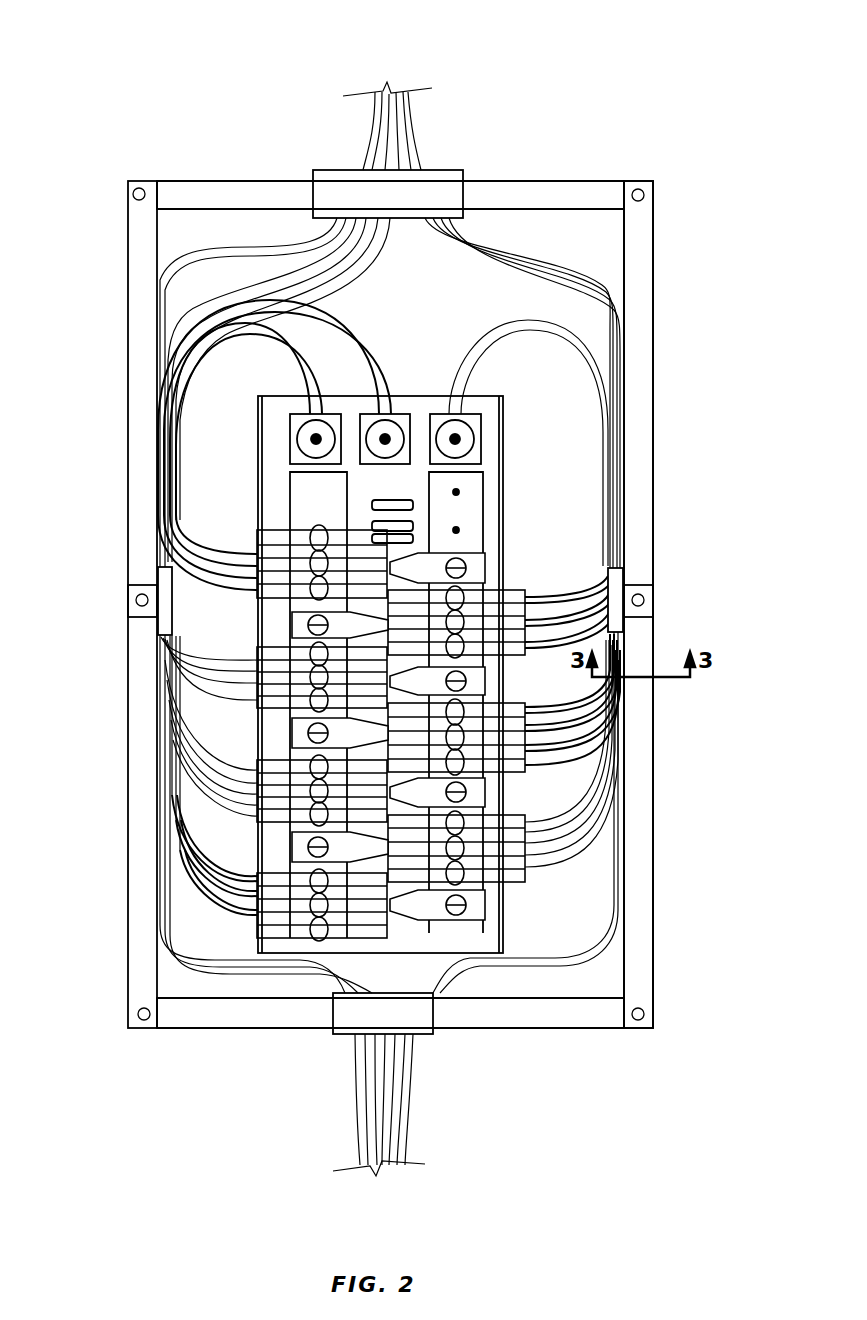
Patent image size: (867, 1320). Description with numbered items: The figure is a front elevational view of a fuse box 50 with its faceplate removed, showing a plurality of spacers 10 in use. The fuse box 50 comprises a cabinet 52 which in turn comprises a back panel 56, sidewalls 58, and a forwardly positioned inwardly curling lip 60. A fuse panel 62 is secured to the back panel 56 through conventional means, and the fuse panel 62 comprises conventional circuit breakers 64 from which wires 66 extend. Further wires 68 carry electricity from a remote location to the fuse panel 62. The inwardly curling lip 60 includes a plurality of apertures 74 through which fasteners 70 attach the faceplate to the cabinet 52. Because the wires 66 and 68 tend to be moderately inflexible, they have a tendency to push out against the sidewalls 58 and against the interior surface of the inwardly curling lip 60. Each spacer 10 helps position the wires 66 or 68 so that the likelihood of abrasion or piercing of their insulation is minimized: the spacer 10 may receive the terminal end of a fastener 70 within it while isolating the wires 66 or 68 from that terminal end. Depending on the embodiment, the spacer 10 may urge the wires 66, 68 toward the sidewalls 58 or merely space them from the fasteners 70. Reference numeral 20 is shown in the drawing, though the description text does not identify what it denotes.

The spacer 10 is at (183, 617).
The mounting bracket 20 is at (135, 590).
The fuse box 50 is at (624, 72).
The cabinet 52 is at (682, 331).
The back panel 56 is at (480, 304).
The sidewalls 58 is at (662, 918).
The inwardly curling lip 60 is at (600, 192).
The fuse panel 62 is at (512, 460).
The circuit breakers 64 is at (277, 557).
The wires 66 is at (178, 716).
The wires 68 is at (290, 350).
The fastener 70 is at (136, 600).
The apertures 74 is at (138, 188).